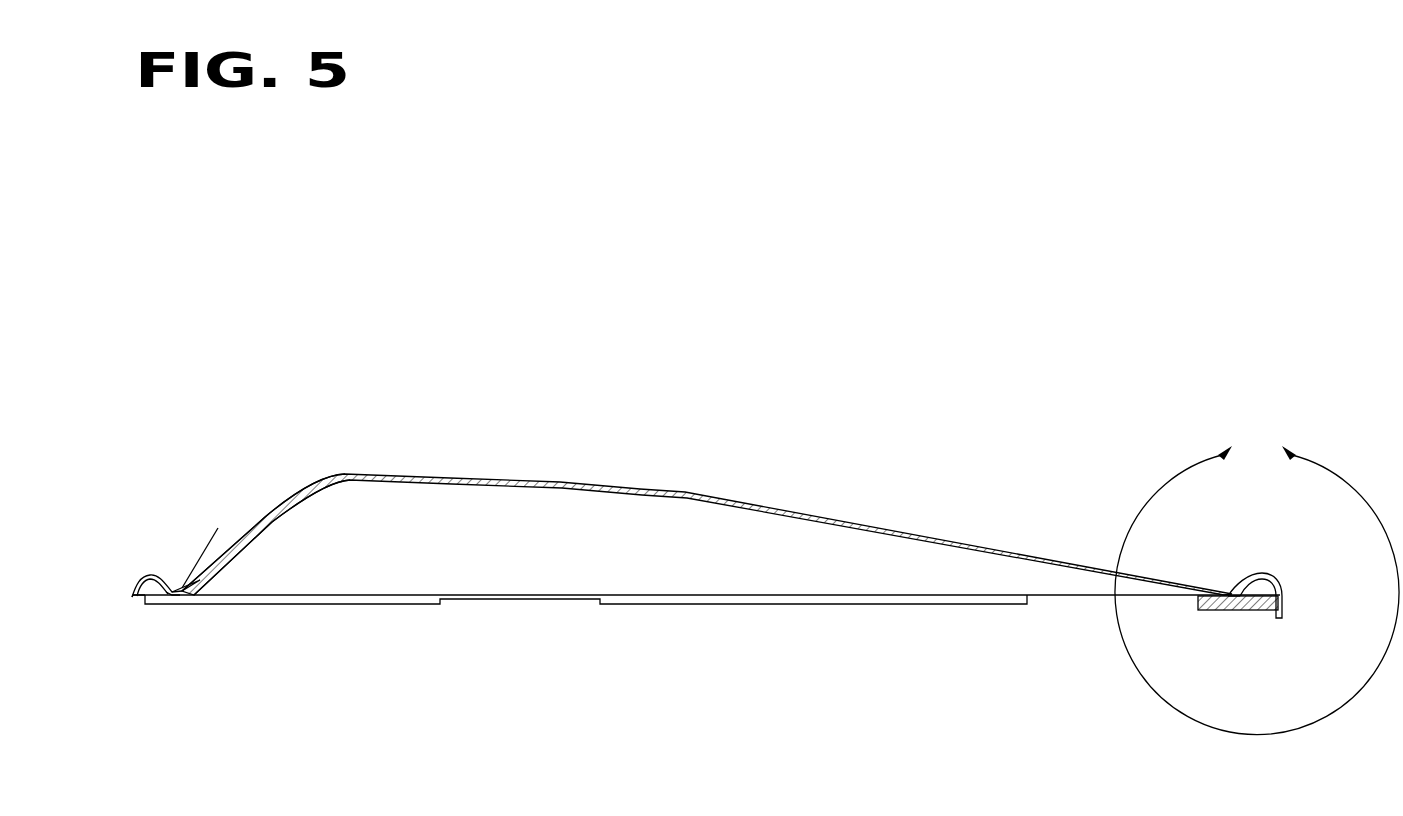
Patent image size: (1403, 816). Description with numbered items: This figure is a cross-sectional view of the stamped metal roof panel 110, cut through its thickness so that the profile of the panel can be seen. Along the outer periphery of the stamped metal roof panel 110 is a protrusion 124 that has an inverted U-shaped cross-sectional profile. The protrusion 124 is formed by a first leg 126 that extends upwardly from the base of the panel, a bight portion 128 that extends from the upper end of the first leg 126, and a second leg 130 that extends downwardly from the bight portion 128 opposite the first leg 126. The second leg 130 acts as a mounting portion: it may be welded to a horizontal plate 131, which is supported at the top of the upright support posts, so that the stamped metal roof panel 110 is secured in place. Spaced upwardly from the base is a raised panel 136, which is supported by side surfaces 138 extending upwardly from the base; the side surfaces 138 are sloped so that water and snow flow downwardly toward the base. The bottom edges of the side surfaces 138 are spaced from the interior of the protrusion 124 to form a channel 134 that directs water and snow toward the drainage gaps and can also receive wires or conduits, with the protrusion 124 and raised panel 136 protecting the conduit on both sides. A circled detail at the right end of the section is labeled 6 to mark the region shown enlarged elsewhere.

The stamped metal roof panel 110 is at (864, 341).
The protrusion 124 is at (137, 563).
The first leg 126 is at (170, 590).
The bight portion 128 is at (153, 575).
The second leg 130 is at (131, 596).
The horizontal plate 131 is at (1238, 612).
The channel 134 is at (218, 528).
The raised panel 136 is at (676, 489).
The side surfaces 138 is at (261, 518).
The detail view circle (FIG. 6) 6 is at (1257, 584).